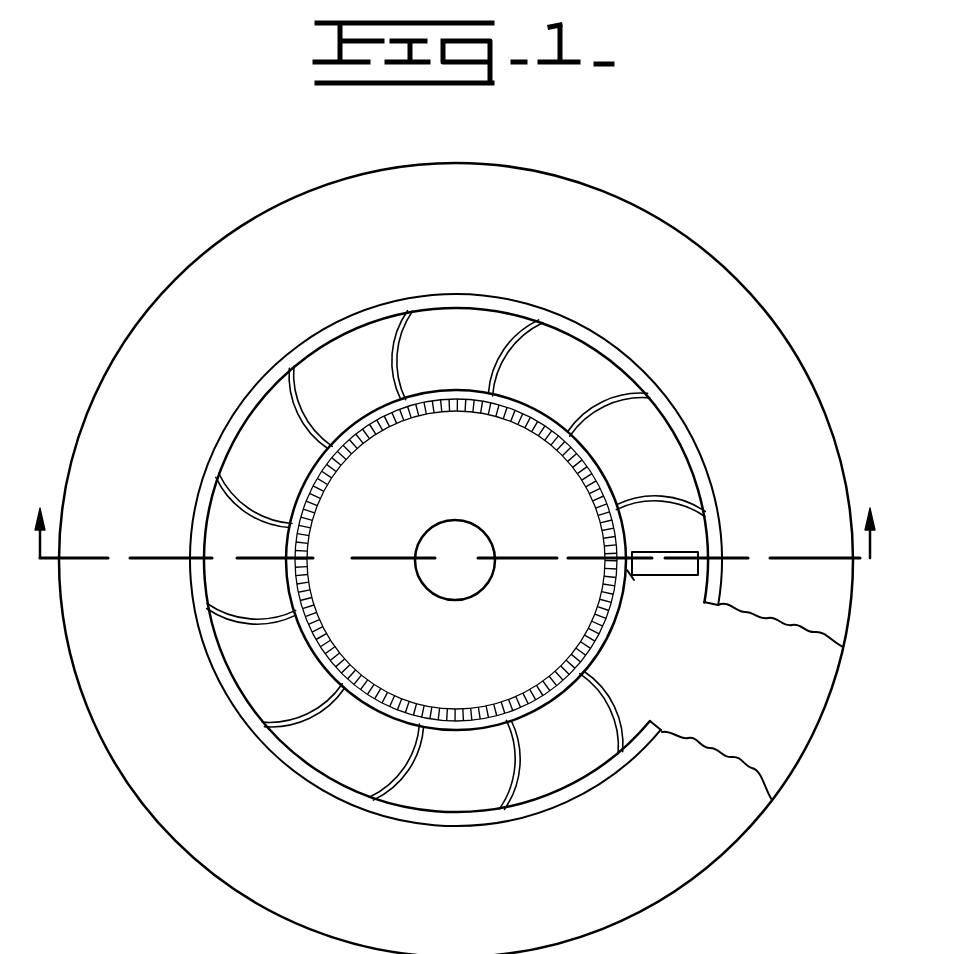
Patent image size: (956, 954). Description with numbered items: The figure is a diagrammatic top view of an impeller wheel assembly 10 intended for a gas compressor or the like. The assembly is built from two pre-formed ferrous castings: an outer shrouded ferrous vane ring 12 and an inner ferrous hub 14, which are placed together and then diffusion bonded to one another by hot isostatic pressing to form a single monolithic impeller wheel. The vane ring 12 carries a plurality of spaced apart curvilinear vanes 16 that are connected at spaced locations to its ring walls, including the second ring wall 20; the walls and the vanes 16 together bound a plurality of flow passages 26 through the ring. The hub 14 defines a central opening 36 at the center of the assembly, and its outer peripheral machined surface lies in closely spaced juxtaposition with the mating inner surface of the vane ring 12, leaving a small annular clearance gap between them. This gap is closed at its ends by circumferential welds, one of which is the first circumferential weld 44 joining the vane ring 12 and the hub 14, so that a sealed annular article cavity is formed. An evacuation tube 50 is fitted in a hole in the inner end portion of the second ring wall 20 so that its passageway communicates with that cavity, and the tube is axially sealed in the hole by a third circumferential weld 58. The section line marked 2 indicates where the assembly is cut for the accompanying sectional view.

The impeller wheel assembly 10 is at (645, 144).
The shrouded ferrous vane ring 12 is at (159, 748).
The ferrous hub 14 is at (428, 465).
The curvilinear vanes 16 is at (303, 418).
The second ring wall 20 is at (734, 703).
The flow passages 26 is at (304, 382).
The central opening 36 is at (432, 582).
The first circumferential weld 44 is at (333, 493).
The evacuation tube 50 is at (688, 548).
The third circumferential weld 58 is at (632, 578).
The section line 2- 2 is at (455, 557).